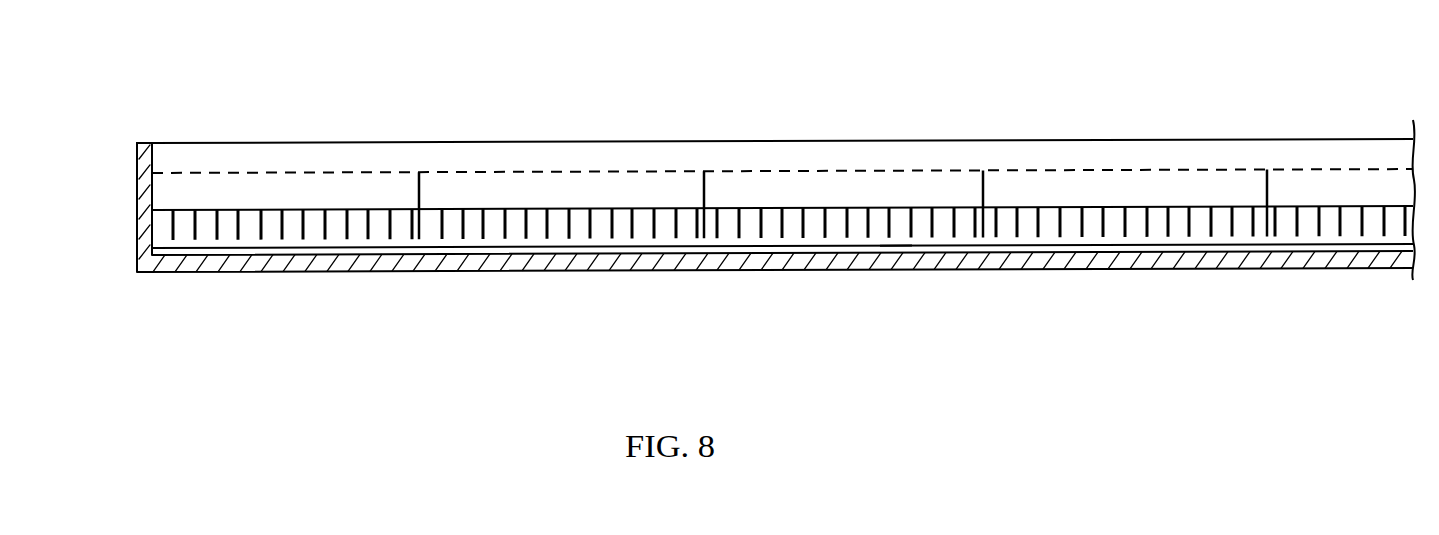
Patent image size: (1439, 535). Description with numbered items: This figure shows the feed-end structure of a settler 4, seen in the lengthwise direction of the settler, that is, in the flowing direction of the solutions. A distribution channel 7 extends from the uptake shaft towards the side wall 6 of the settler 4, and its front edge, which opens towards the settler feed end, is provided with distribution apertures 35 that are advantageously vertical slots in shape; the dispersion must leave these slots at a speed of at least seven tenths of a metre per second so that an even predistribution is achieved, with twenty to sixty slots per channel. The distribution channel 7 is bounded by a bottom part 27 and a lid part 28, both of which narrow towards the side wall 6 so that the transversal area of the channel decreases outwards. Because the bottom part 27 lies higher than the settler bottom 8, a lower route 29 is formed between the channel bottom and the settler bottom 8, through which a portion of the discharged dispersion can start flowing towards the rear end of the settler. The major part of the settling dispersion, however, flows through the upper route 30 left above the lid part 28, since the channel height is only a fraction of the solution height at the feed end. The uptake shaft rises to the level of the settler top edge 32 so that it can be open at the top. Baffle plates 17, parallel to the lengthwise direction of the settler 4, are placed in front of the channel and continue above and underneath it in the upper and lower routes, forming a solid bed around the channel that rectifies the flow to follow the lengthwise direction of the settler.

The settler 4 is at (303, 122).
The side wall 6 is at (137, 160).
The distribution channel 7 is at (1178, 206).
The settler bottom 8 is at (681, 262).
The baffle plate 17 is at (985, 183).
The bottom part of the distribution channel 27 is at (552, 246).
The lid part of the distribution channel 28 is at (653, 222).
The lower route 29 is at (376, 252).
The upper route 30 is at (465, 195).
The settler top edge 32 is at (853, 142).
The distribution aperture 35 is at (896, 241).